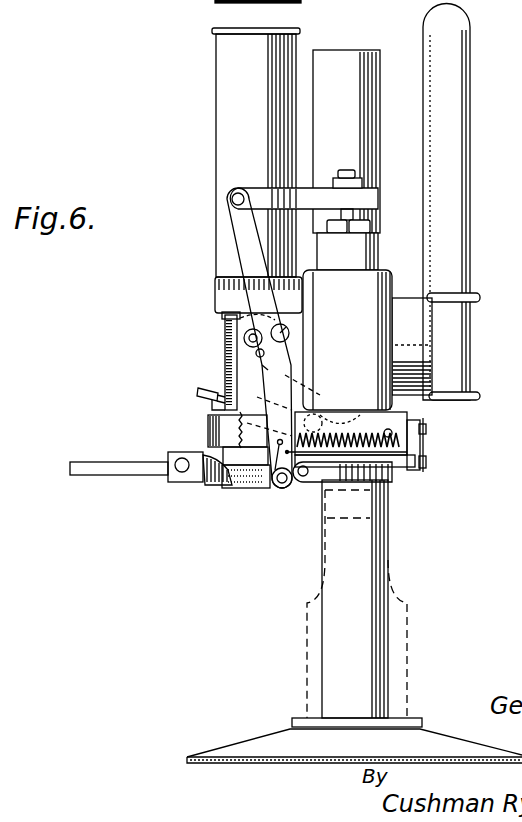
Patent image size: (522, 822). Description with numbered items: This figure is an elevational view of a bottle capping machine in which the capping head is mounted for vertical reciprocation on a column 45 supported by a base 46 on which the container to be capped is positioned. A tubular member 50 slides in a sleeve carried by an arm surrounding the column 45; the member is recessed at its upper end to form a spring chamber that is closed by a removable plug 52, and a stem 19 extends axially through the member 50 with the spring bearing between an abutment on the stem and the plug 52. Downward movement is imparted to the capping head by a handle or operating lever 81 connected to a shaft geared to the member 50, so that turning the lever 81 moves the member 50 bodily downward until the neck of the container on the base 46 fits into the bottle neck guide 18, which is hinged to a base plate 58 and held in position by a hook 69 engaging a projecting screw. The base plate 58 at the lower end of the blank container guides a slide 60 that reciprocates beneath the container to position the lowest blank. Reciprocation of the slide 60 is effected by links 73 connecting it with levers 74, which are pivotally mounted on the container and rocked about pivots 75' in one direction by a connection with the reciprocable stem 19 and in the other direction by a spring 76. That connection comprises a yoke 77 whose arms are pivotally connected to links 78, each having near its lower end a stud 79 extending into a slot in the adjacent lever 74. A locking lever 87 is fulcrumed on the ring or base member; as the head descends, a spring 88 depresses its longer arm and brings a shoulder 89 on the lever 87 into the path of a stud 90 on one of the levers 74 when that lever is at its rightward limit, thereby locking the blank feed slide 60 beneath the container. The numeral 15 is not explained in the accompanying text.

The column 15 is at (360, 587).
The bottle neck guide 18 is at (360, 470).
The stem 19 is at (378, 212).
The column 45 is at (356, 145).
The base 46 is at (238, 745).
The tubular member 50 is at (370, 262).
The plug 52 is at (355, 229).
The base plate 58 is at (242, 452).
The slide 60 is at (175, 467).
The hook 69 is at (425, 441).
The links 73 is at (258, 478).
The levers 74 is at (278, 388).
The pivots 75' is at (284, 295).
The spring 76 is at (355, 430).
The yoke 77 is at (262, 189).
The links 78 is at (250, 258).
The stud 79 is at (247, 340).
The operating lever 81 is at (455, 188).
The lever 87 is at (205, 393).
The spring 88 is at (210, 426).
The shoulder 89 is at (217, 405).
The stud 90 is at (271, 490).